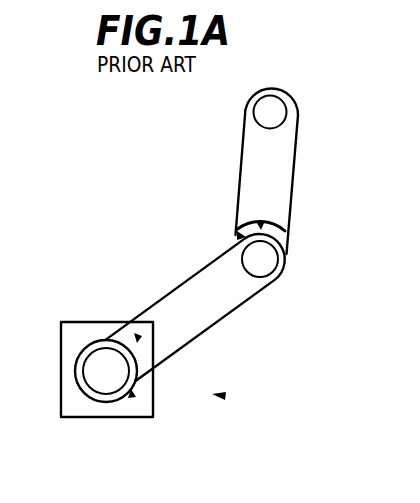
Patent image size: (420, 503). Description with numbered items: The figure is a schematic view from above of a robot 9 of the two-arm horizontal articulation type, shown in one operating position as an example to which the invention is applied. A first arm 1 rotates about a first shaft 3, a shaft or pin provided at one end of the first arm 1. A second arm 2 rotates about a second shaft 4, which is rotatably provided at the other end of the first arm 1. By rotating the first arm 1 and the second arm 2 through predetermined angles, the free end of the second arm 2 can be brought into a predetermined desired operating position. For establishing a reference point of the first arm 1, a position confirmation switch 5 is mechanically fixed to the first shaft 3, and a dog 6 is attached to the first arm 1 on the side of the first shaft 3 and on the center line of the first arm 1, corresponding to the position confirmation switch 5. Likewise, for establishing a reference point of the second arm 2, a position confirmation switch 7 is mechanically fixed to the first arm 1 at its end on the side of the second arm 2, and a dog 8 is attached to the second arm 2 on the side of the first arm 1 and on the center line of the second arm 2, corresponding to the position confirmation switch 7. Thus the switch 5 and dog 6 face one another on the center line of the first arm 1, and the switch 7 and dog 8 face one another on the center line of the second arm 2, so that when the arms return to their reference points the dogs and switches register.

The first arm 1 is at (213, 303).
The second arm 2 is at (278, 173).
The first shaft 3 is at (95, 372).
The second shaft 4 is at (262, 261).
The position confirmation switch 5 is at (130, 398).
The dog 6 is at (136, 334).
The position confirmation switch 7 is at (240, 236).
The dog 8 is at (263, 230).
The robot 9 is at (224, 396).